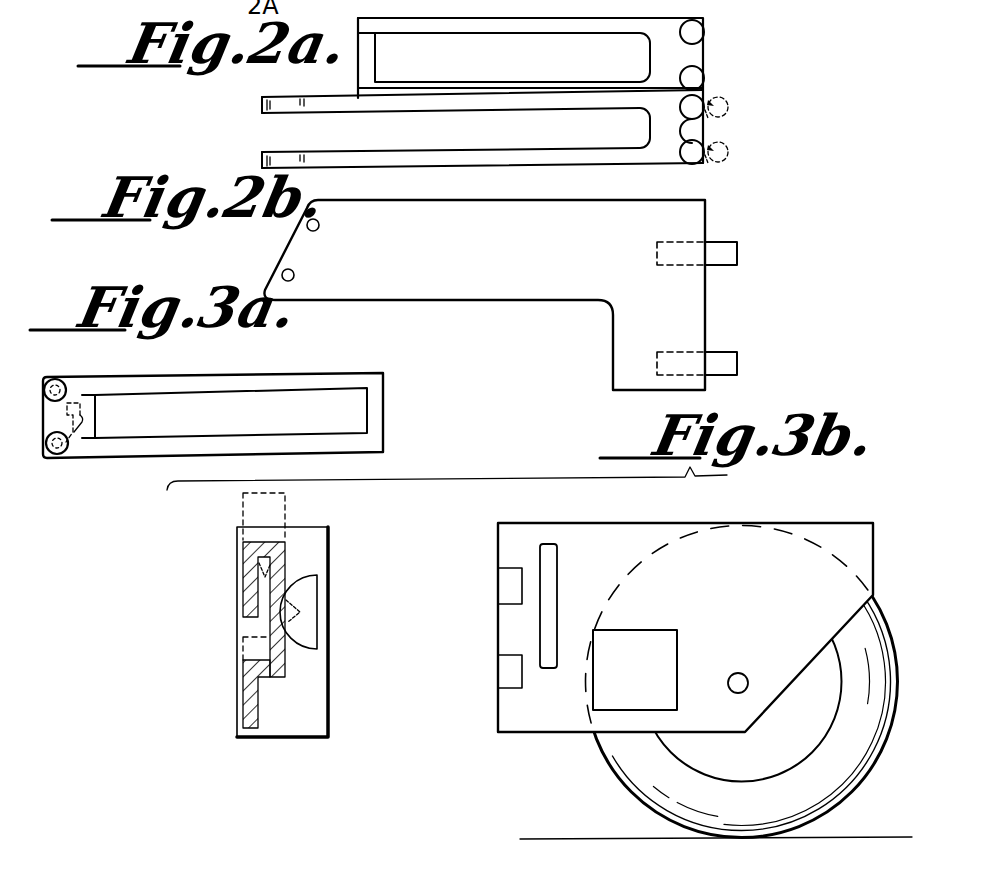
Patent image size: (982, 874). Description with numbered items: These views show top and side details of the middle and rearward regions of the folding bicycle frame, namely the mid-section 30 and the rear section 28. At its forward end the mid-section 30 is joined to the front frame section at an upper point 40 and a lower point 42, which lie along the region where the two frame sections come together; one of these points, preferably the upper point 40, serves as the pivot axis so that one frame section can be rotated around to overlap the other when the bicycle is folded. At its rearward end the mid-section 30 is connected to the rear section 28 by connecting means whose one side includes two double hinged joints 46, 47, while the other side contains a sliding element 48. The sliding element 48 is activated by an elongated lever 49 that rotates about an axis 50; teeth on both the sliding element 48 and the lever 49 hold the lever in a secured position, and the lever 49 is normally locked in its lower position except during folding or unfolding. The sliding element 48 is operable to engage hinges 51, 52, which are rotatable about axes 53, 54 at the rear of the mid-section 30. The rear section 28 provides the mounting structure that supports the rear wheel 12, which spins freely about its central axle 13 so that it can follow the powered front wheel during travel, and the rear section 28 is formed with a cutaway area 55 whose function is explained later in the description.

In FIG. 3B, the rear wheel 12 is at (637, 757).
In FIG. 3B, the central axle 13 is at (741, 673).
In FIG. 2A, the rear frame section 28 is at (612, 22).
In FIG. 3A, the rear frame section 28 is at (328, 378).
In FIG. 3B, the rear frame section 28 is at (598, 523).
In FIG. 2A, the mid-section 30 is at (590, 163).
In FIG. 2B, the mid-section 30 is at (544, 288).
In FIG. 2B, the upper point 40 is at (319, 229).
In FIG. 2B, the lower point 42 is at (294, 277).
In FIG. 2A, the double hinged joint 46 is at (719, 97).
In FIG. 2A, the double hinged joint 47 is at (748, 108).
In FIG. 3A, the sliding element 48 is at (88, 418).
In FIG. 3B, the sliding element 48 is at (517, 623).
In FIG. 3B, the elongated lever 49 is at (555, 610).
In FIG. 3B, the axis 50 is at (320, 611).
In FIG. 2A, the hinge 51 is at (741, 156).
In FIG. 2B, the hinge 51 is at (737, 259).
In FIG. 2A, the hinge 52 is at (753, 175).
In FIG. 2B, the hinge 52 is at (737, 375).
In FIG. 2A, the axis 53 is at (711, 152).
In FIG. 2B, the axis 53 is at (690, 267).
In FIG. 2A, the axis 54 is at (706, 159).
In FIG. 2B, the axis 54 is at (688, 328).
In FIG. 3B, the cutaway area 55 is at (667, 622).